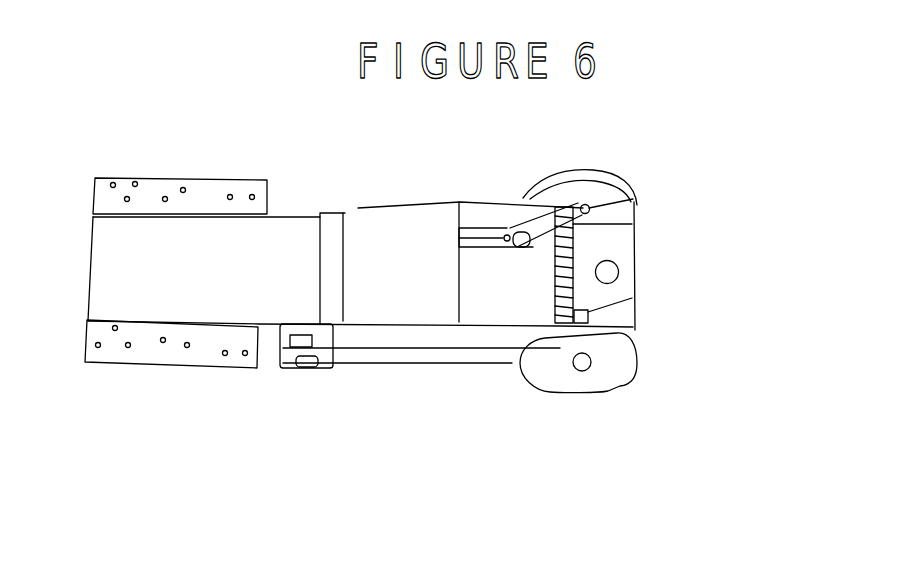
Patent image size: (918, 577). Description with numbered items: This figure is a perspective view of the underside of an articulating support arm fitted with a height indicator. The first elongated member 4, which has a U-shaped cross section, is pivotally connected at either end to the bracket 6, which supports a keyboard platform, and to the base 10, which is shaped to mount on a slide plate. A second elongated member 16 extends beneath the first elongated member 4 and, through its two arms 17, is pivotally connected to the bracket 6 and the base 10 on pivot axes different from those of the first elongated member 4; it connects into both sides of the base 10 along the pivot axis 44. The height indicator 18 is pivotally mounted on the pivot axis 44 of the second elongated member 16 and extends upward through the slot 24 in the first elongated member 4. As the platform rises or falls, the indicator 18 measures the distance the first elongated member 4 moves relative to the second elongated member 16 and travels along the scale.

The first elongated member 4 is at (418, 355).
The bracket 6 is at (200, 186).
The base 10 is at (610, 247).
The second elongated member 16 is at (390, 228).
The arms 17 is at (323, 338).
The height indicator 18 is at (553, 212).
The slot 24 is at (482, 240).
The pivot axis 44 is at (636, 197).